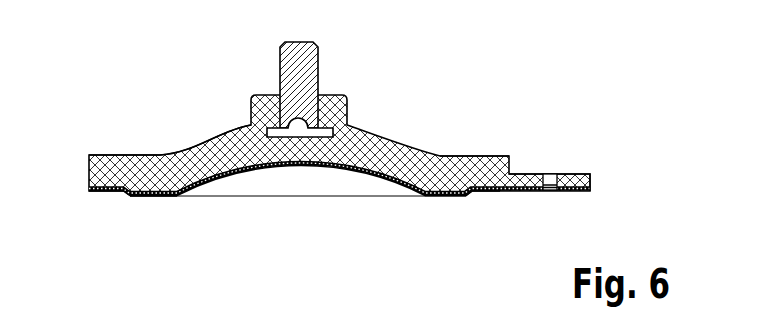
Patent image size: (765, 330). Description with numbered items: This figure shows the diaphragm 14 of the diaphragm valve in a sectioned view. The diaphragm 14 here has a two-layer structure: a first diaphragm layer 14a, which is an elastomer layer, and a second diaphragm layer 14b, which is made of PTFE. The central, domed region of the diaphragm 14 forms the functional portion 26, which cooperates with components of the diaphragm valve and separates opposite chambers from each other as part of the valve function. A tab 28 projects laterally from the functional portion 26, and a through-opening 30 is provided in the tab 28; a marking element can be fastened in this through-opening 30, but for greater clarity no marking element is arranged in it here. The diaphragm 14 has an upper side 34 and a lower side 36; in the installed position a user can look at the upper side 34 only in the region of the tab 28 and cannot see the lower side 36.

The diaphragm 14 is at (383, 154).
The first diaphragm layer 14a is at (205, 150).
The second diaphragm layer 14b is at (112, 196).
The functional portion 26 is at (462, 148).
The tab 28 is at (583, 173).
The through-opening 30 is at (550, 174).
The upper side 34 is at (130, 152).
The lower side 36 is at (495, 197).